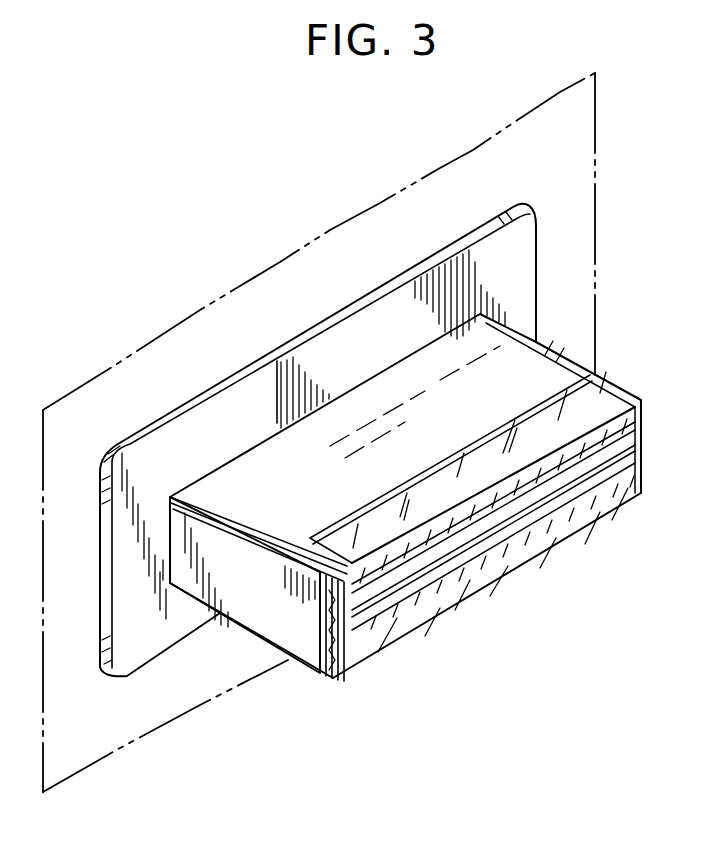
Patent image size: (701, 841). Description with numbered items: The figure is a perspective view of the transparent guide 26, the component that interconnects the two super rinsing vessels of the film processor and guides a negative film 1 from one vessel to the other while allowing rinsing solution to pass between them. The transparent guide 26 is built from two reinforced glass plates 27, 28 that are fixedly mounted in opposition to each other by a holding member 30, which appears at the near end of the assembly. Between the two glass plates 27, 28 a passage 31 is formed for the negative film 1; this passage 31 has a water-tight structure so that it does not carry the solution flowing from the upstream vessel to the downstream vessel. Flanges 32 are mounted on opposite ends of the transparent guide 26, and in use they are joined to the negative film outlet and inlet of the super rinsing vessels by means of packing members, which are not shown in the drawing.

The negative film 1 is at (508, 522).
The transparent guide 26 is at (313, 688).
The reinforced glass plate 27 is at (578, 420).
The reinforced glass plate 28 is at (587, 517).
The holding member 30 is at (270, 625).
The passage 31 is at (435, 577).
The flange 32 is at (211, 417).